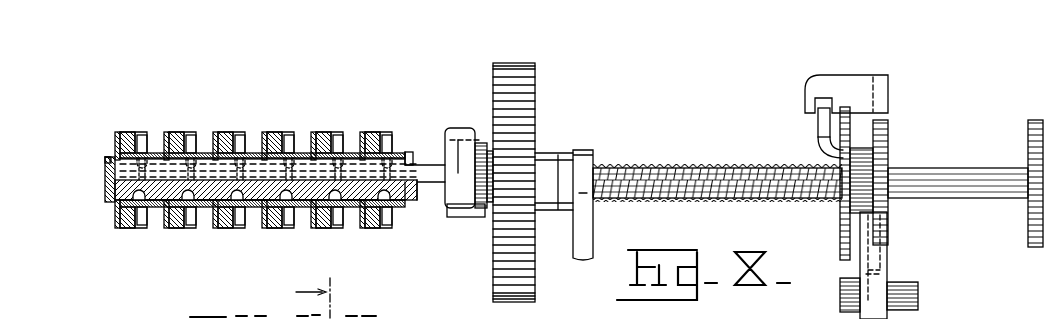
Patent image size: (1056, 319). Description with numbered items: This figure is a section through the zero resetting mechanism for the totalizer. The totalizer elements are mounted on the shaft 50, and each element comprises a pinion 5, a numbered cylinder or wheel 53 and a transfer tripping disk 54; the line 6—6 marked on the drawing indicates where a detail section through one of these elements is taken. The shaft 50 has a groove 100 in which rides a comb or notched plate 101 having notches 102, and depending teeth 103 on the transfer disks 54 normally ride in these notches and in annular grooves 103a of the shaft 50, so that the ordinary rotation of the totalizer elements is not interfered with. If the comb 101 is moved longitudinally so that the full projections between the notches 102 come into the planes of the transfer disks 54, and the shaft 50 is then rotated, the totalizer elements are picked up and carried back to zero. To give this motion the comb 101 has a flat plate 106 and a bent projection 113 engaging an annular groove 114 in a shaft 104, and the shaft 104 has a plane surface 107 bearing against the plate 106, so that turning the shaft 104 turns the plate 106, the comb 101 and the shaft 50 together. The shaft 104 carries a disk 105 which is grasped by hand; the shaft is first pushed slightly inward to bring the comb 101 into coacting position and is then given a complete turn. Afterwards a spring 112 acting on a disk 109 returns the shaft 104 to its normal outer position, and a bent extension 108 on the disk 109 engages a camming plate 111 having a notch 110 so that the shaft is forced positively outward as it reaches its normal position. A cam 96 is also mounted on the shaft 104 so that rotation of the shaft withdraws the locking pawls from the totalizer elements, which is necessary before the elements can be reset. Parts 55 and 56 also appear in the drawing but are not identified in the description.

The pinion 5 is at (143, 230).
The section line 6 is at (316, 288).
The shaft 50 is at (345, 222).
The numbered cylinder or wheel 53 is at (120, 140).
The transfer tripping disk 54 is at (116, 140).
The cam plate 55 is at (155, 153).
The end piece 56 is at (108, 202).
The cam 96 is at (515, 63).
The groove 100 is at (122, 172).
The comb or notched plate 101 is at (252, 158).
The notches 102 is at (305, 158).
The teeth 103 is at (348, 150).
The annular grooves 103a is at (112, 160).
The shaft 104 is at (945, 162).
The disk 105 is at (1028, 222).
The flat plate 106 is at (458, 140).
The plane surface 107 is at (457, 217).
The bent extension 108 is at (828, 125).
The disk 109 is at (870, 110).
The notch 110 is at (818, 113).
The camming plate 111 is at (850, 75).
The spring 112 is at (630, 167).
The bent projection 113 is at (487, 145).
The annular groove 114 is at (491, 202).